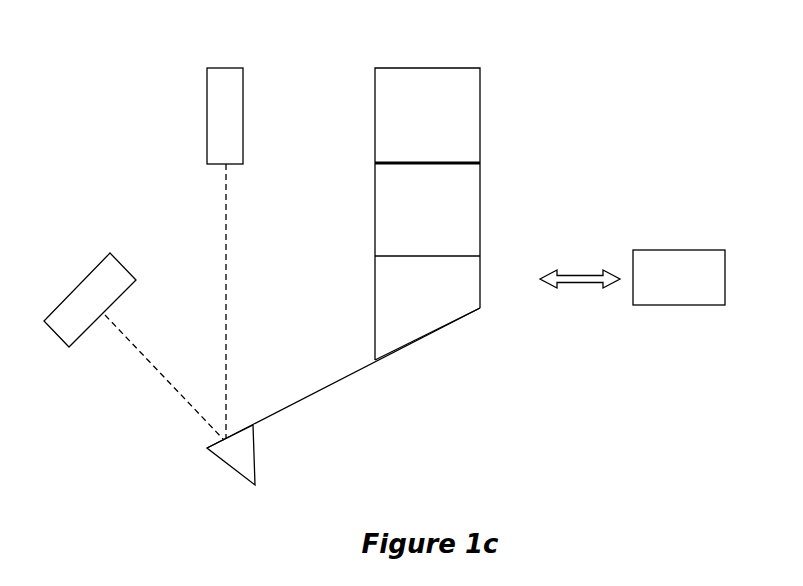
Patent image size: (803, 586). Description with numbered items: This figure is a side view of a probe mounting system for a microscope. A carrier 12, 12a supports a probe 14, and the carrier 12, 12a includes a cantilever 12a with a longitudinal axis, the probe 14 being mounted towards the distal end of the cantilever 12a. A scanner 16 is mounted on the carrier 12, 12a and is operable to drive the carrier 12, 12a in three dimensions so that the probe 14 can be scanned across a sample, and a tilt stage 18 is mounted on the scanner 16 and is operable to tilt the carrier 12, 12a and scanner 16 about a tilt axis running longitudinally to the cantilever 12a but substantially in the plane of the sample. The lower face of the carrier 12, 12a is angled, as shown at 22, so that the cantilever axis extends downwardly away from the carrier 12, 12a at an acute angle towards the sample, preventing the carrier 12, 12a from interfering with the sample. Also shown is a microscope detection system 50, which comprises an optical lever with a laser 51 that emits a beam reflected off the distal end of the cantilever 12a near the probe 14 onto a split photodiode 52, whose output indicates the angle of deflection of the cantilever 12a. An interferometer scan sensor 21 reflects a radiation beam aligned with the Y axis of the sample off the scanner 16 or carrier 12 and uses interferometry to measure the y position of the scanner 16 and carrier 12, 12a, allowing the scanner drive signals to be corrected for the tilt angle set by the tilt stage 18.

The microscope detection system 50 is at (128, 112).
The laser 51 is at (230, 81).
The split photodiode 52 is at (97, 278).
The probe 14 is at (237, 454).
The carrier 12 is at (399, 258).
The cantilever 12a is at (337, 382).
The angled lower face 22 is at (438, 330).
The scanner 16 is at (462, 201).
The tilt stage 18 is at (462, 121).
The interferometer scan sensor 21 is at (675, 277).